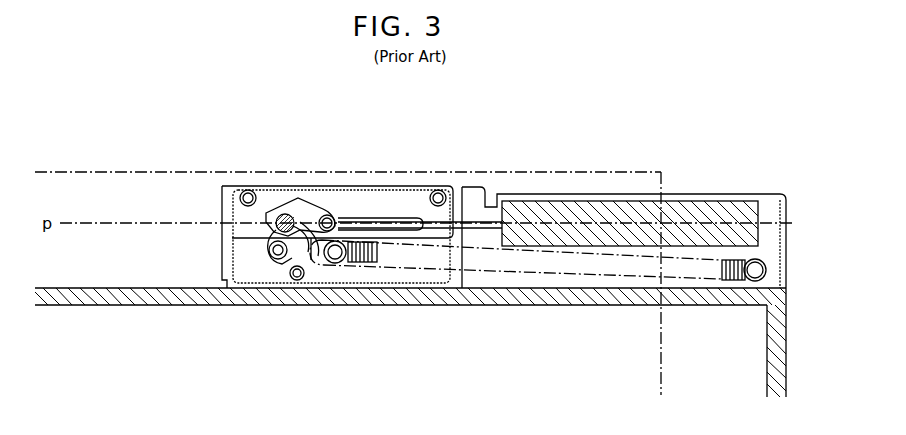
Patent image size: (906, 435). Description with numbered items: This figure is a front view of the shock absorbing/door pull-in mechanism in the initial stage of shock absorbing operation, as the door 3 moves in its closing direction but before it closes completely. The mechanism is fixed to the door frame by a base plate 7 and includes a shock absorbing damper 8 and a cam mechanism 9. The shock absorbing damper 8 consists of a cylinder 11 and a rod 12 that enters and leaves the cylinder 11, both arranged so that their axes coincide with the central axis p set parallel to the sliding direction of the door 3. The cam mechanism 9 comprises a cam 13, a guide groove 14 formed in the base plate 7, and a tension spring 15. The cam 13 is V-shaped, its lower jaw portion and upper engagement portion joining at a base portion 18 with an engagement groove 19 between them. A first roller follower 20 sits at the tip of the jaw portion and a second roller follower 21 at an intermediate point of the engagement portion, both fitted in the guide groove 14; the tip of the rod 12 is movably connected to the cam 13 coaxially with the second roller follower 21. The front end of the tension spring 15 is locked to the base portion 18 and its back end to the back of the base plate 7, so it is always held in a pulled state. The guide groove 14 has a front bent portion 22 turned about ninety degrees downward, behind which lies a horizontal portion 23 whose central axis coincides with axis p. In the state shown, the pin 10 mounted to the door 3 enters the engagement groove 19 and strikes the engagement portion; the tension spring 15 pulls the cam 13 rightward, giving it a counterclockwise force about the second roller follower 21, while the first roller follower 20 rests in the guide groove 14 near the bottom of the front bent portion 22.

The door 3 is at (96, 171).
The base plate 7 is at (424, 191).
The shock absorbing damper 8 is at (603, 200).
The cam mechanism 9 is at (285, 262).
The pin 10 is at (282, 216).
The cylinder 11 is at (680, 198).
The rod 12 is at (468, 223).
The cam 13 is at (302, 198).
The guide groove 14 is at (395, 221).
The tension spring 15 is at (414, 257).
The base portion 18 is at (328, 262).
The engagement groove 19 is at (311, 238).
The first roller follower 20 is at (277, 254).
The second roller follower 21 is at (330, 214).
The front bent portion 22 is at (277, 231).
The horizontal portion 23 is at (378, 212).